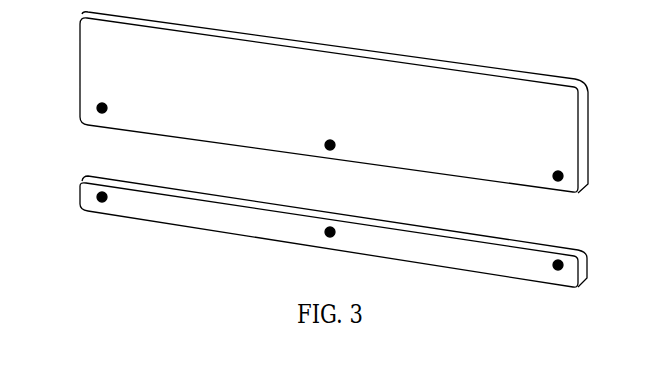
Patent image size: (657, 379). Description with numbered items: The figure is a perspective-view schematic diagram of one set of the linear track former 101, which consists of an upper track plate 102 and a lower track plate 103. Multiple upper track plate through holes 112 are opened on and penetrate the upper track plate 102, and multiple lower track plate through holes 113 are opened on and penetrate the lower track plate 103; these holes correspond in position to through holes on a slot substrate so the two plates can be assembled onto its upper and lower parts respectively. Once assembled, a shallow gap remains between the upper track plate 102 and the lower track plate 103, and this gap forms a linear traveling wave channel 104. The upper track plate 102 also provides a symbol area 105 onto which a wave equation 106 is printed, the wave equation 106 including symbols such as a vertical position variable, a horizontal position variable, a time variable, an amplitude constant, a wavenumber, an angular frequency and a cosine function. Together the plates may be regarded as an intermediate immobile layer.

The linear track former 101 is at (58, 232).
The upper track plate 102 is at (334, 102).
The lower track plate 103 is at (333, 231).
The linear traveling wave channel 104 is at (328, 185).
The symbol area 105 is at (468, 115).
The wave equation 106 is at (326, 85).
The upper track plate through holes 112 is at (102, 102).
The lower track plate through holes 113 is at (102, 191).